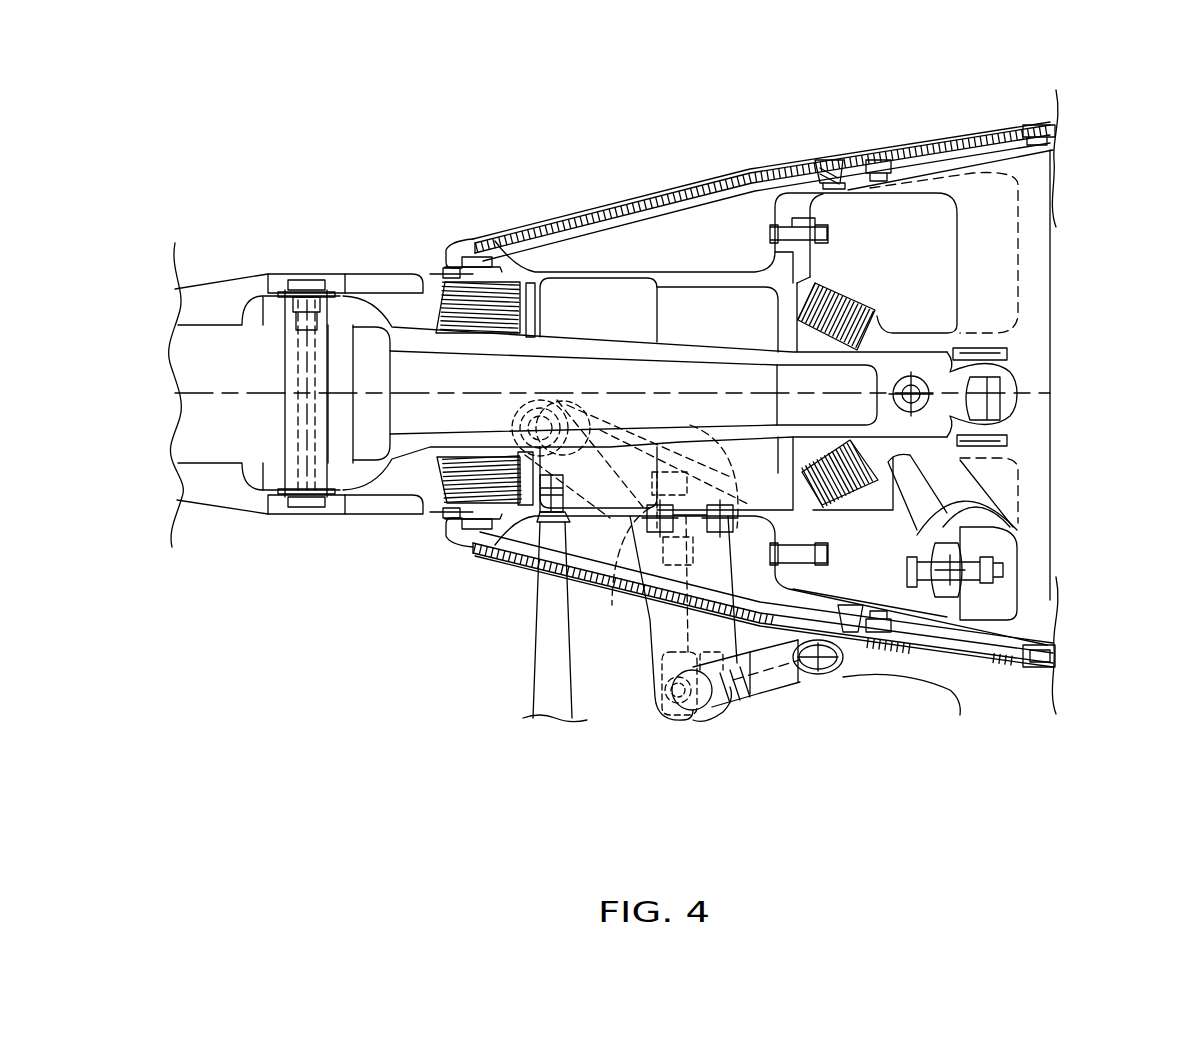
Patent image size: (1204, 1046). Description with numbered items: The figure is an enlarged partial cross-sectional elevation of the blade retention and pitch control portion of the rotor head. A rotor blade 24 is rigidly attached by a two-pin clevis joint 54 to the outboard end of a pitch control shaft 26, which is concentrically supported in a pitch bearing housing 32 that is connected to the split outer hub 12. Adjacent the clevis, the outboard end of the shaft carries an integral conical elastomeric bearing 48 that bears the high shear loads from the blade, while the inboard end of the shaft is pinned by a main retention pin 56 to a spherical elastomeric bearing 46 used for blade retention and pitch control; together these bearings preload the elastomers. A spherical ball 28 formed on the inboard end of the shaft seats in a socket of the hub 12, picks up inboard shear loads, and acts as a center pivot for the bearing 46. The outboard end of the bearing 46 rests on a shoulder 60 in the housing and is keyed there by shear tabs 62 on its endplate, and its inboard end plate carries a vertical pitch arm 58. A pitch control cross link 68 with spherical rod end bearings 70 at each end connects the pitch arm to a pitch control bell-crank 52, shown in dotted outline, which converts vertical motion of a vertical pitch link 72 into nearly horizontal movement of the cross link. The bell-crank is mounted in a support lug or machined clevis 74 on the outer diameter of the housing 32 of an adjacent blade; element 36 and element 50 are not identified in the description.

The split outer hub 12 is at (1037, 562).
The rotor blade 24 is at (235, 505).
The pitch control shaft 26 is at (413, 460).
The spherical ball 28 is at (985, 418).
The pitch bearing housing 32 is at (612, 272).
The chain band 36 is at (953, 135).
The spherical elastomeric bearing 46 is at (842, 288).
The conical elastomeric bearing 48 is at (520, 302).
The link 50 is at (617, 600).
The pitch control bell-crank 52 is at (652, 627).
The two-pin clevis joint 54 is at (330, 355).
The main retention pin 56 is at (965, 378).
The pitch arm 58 is at (975, 500).
The shoulder 60 is at (790, 252).
The shear tabs 62 is at (778, 305).
The pitch control cross link 68 is at (1003, 600).
The spherical rod end bearing 70 is at (960, 528).
The vertical pitch link 72 is at (532, 635).
The support lug / machined clevis 74 is at (705, 440).